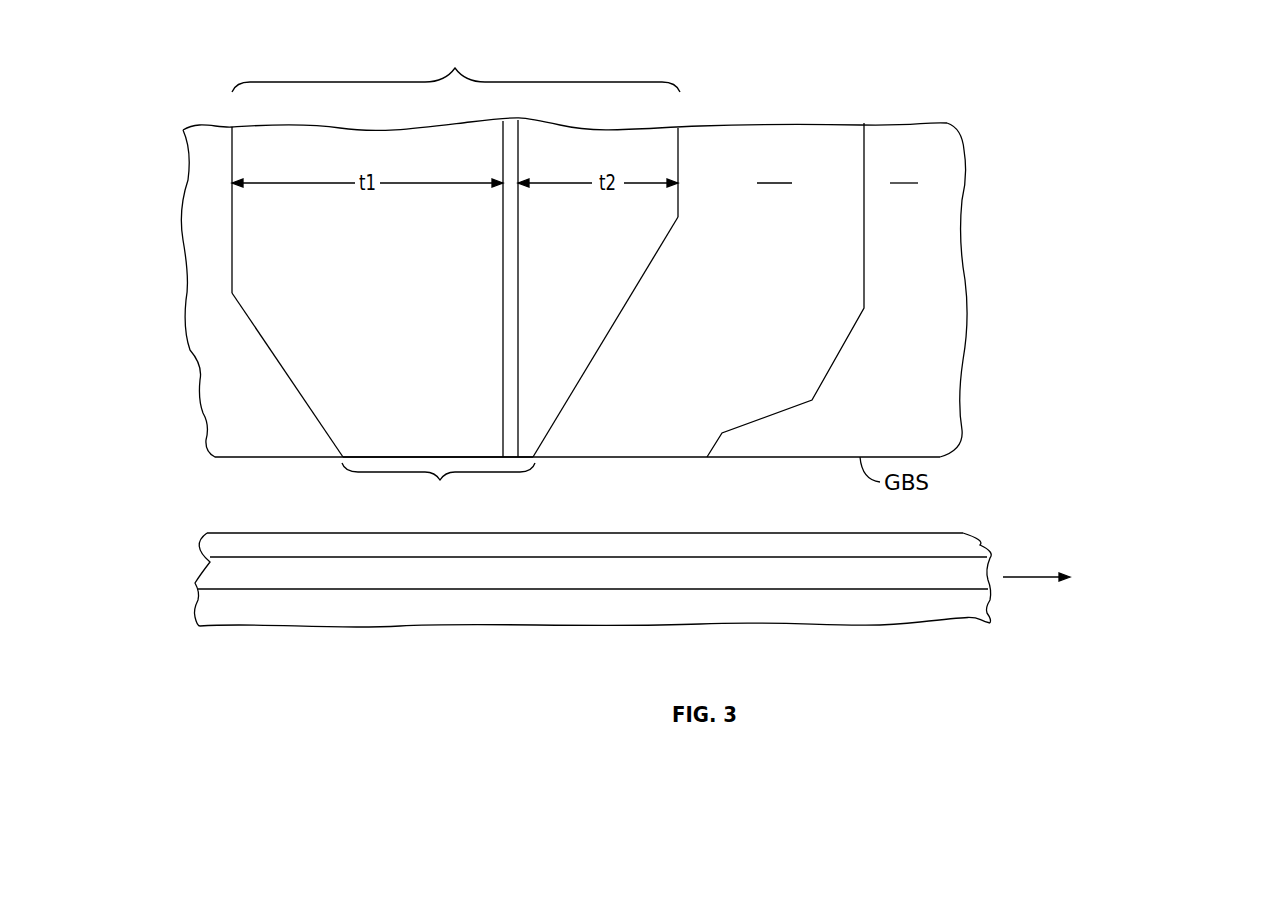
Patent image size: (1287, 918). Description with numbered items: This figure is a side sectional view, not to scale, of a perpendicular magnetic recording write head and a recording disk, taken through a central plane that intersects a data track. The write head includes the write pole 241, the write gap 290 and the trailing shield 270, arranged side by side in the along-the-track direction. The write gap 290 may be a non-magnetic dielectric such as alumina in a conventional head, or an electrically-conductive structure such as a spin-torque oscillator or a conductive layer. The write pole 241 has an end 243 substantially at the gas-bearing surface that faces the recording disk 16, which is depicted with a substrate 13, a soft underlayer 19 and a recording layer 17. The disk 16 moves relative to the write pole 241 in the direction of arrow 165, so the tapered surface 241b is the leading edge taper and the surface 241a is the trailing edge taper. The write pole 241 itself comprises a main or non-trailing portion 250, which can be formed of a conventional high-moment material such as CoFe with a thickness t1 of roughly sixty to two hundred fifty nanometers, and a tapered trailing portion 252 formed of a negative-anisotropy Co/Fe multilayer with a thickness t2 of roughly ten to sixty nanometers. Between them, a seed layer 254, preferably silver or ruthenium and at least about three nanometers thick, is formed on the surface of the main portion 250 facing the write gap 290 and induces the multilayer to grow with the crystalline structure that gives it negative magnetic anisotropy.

The write pole 241 is at (456, 53).
The main portion 250 is at (347, 137).
The tapered trailing portion 252 is at (593, 138).
The seed layer 254 is at (512, 260).
The trailing edge taper 241a is at (602, 343).
The leading edge taper 241b is at (287, 382).
The end 243 is at (438, 484).
The write gap 290 is at (782, 138).
The trailing shield 270 is at (932, 135).
The recording disk 16 is at (593, 589).
The RL 17 is at (963, 532).
The SUL 19 is at (972, 573).
The substrate 13 is at (978, 607).
The arrow 165 is at (1037, 572).